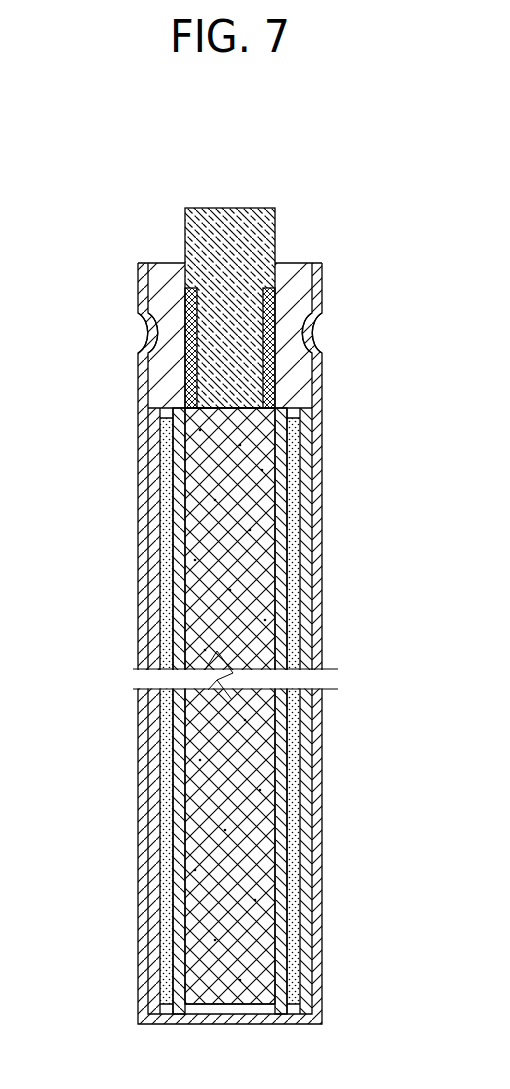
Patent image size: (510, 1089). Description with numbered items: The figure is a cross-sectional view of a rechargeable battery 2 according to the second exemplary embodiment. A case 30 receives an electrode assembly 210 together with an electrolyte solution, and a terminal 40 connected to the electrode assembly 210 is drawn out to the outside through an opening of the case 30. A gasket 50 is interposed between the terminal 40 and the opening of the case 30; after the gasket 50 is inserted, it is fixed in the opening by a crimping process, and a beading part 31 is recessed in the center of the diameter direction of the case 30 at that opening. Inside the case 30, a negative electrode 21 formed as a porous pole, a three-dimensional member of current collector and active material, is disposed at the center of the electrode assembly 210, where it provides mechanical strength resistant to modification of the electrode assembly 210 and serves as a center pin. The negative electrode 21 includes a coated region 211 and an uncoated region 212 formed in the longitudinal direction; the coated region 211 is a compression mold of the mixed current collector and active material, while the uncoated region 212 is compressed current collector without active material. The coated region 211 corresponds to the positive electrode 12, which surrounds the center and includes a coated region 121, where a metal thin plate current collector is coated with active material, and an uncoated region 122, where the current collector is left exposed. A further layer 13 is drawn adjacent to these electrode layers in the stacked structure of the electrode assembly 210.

The rechargeable battery 2 is at (90, 156).
The positive electrode 12 is at (281, 711).
The coated region 121 is at (292, 705).
The uncoated region 122 is at (307, 727).
The electrode layer 13 is at (282, 934).
The negative electrode 21 is at (162, 372).
The coated region 211 is at (190, 437).
The uncoated region 212 is at (190, 389).
The electrode assembly 210 is at (281, 711).
The case 30 is at (323, 808).
The beading part 31 is at (312, 333).
The terminal 40 is at (231, 208).
The gasket 50 is at (300, 276).